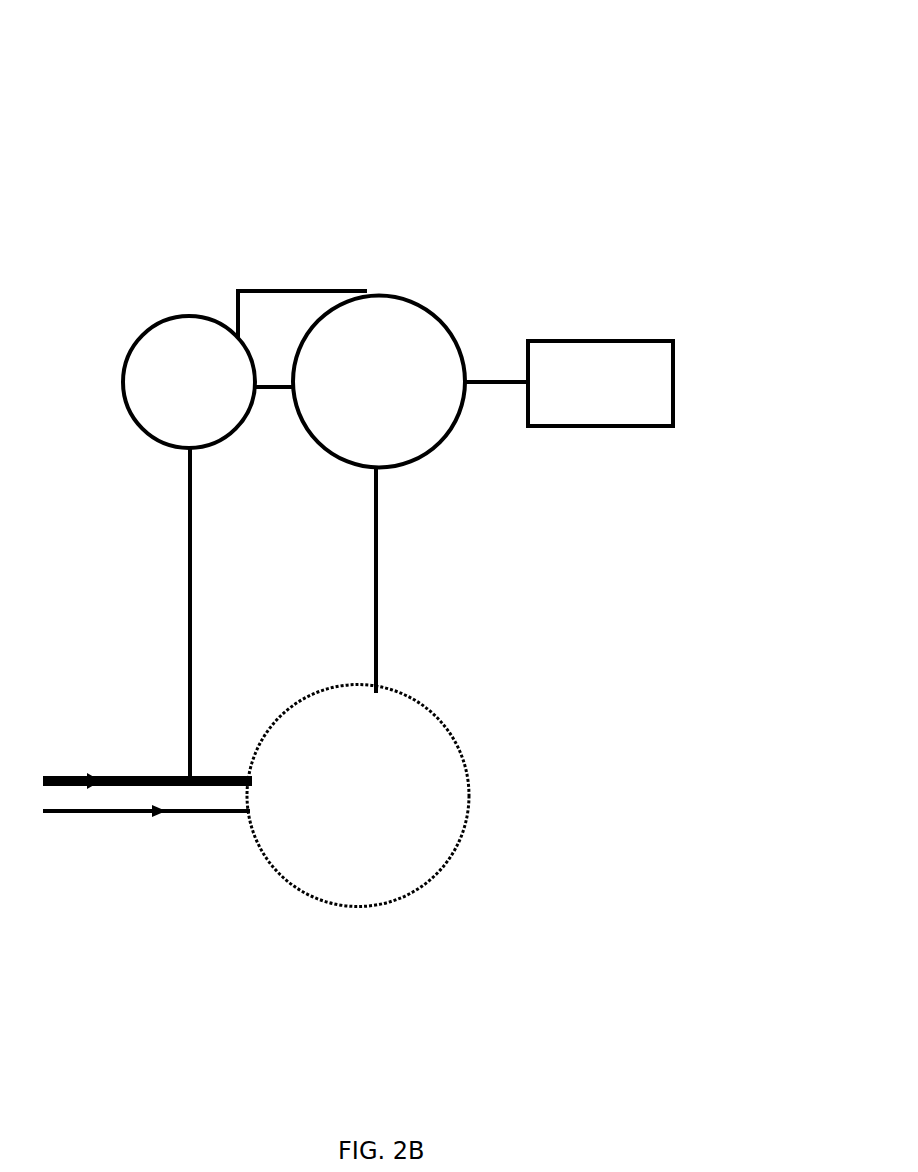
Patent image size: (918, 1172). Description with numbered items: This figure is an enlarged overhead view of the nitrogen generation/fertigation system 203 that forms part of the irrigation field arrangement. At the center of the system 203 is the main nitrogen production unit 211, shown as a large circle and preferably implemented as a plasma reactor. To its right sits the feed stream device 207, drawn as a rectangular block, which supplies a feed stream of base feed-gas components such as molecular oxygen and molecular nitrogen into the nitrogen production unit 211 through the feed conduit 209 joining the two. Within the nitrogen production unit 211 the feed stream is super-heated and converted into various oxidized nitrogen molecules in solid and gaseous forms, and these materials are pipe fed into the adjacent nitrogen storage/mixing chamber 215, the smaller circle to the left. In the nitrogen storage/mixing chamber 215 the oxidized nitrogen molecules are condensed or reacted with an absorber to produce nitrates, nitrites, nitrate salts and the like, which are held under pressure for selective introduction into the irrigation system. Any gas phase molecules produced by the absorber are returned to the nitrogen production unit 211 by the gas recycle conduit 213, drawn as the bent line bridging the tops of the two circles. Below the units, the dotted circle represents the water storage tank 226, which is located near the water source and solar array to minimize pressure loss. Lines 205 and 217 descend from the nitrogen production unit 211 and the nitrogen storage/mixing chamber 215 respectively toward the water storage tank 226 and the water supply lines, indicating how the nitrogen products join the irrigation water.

The nitrogen generation/fertigation system 203 is at (652, 84).
The supply line 205 is at (377, 649).
The feed stream device 207 is at (635, 383).
The feed conduit 209 is at (500, 380).
The nitrogen production unit 211 is at (386, 342).
The gas recycle conduit 213 is at (273, 288).
The nitrogen storage/mixing chamber 215 is at (169, 333).
The return line 217 is at (190, 642).
The water storage tank 226 is at (398, 755).